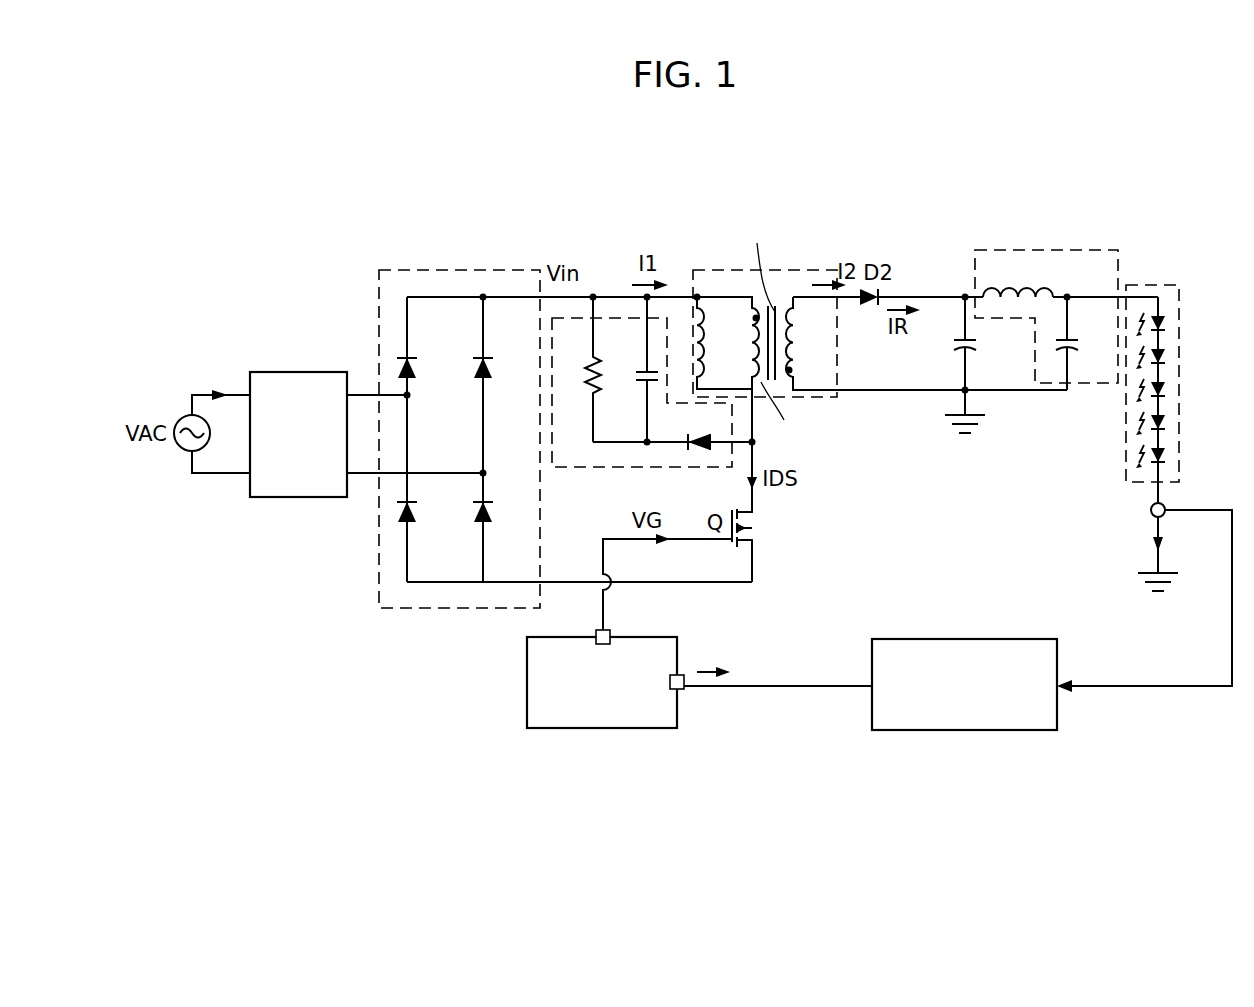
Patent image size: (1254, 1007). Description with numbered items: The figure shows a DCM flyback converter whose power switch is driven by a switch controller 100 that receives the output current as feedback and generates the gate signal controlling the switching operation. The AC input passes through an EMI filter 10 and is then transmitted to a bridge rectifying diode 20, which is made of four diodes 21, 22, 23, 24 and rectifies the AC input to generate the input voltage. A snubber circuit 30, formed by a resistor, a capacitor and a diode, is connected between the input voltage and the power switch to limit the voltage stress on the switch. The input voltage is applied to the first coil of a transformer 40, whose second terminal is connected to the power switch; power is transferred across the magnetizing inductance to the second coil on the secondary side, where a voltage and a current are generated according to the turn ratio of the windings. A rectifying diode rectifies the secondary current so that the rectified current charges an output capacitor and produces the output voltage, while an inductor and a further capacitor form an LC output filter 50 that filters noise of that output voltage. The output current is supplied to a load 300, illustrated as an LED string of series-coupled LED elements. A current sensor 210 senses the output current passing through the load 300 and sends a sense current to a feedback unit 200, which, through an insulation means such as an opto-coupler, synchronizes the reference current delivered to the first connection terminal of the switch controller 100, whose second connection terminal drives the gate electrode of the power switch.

The EMI filter 10 is at (310, 372).
The bridge rectifying diode 20 is at (549, 416).
The diode 21 is at (418, 372).
The diode 22 is at (418, 516).
The diode 23 is at (494, 372).
The diode 24 is at (494, 516).
The snubber circuit 30 is at (585, 467).
The transformer 40 is at (791, 270).
The LC output filter 50 is at (1083, 250).
The switch controller 100 is at (527, 681).
The feedback unit 200 is at (1012, 638).
The current sensor 210 is at (1151, 510).
The load 300 is at (1172, 285).